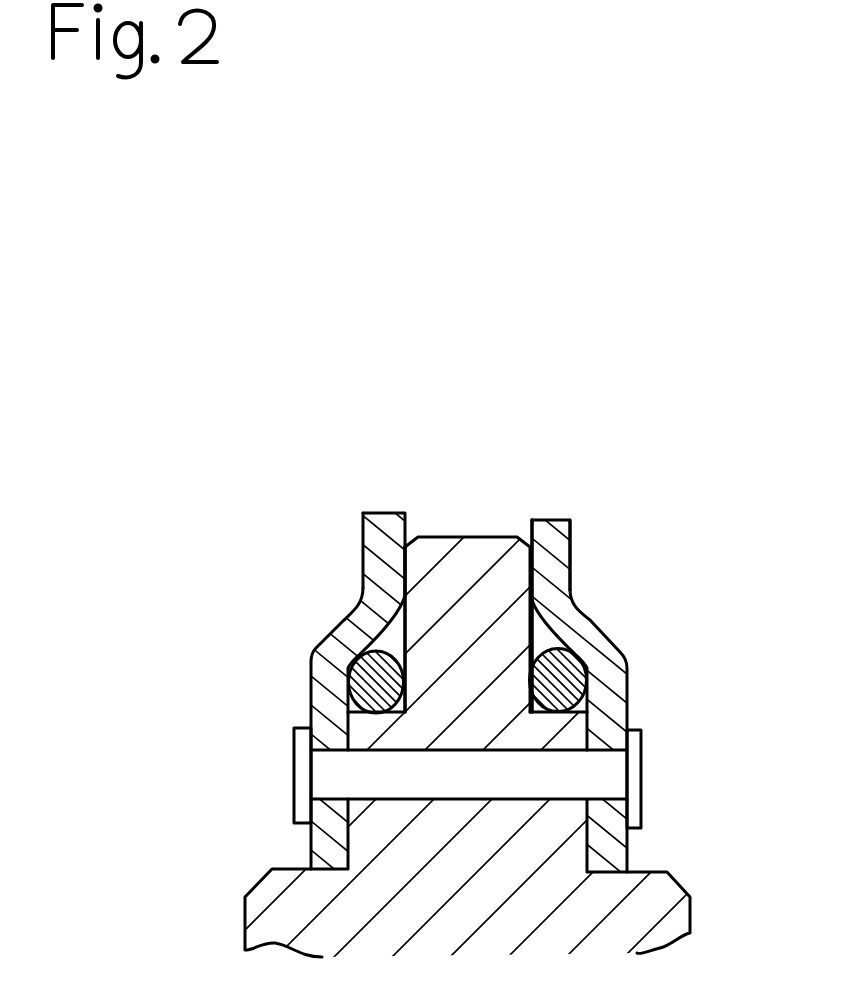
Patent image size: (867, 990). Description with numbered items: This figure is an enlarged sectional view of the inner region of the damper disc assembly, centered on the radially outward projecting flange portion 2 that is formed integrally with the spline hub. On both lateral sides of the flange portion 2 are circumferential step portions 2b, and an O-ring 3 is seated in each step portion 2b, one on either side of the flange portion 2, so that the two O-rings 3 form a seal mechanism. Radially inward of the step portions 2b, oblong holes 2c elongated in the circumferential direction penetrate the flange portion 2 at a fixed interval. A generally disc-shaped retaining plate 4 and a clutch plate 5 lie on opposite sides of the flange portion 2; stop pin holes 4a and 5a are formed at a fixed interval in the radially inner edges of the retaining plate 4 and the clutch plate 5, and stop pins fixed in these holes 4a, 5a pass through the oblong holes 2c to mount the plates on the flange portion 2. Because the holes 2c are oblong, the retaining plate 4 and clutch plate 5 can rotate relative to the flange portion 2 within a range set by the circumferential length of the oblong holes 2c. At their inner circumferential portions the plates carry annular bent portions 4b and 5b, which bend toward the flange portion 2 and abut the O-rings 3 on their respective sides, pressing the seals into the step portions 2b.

The flange portion 2 is at (477, 555).
The circumferential step portions 2b is at (348, 692).
The oblong holes 2c is at (400, 791).
The O-rings 3 is at (352, 656).
The retaining plate 4 is at (566, 558).
The stop pin holes 4a is at (597, 752).
The annular bent portion 4b is at (585, 615).
The clutch plate 5 is at (382, 544).
The stop pin holes 5a is at (312, 768).
The annular bent portion 5b is at (362, 592).